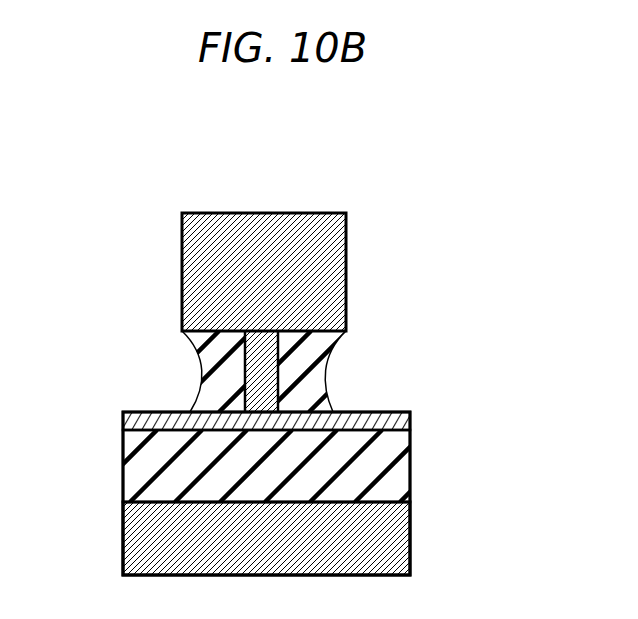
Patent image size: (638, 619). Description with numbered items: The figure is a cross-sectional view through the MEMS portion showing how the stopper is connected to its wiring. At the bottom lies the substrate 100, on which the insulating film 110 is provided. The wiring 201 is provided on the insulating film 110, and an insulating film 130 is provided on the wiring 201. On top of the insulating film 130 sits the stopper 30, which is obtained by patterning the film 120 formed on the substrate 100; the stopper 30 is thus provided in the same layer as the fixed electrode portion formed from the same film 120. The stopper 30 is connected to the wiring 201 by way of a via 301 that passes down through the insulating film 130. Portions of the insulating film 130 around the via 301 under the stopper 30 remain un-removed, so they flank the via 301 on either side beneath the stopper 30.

The stopper 30 is at (307, 224).
The film 120 is at (358, 210).
The insulating film 130 is at (307, 360).
The via 301 is at (243, 365).
The wiring 201 is at (397, 417).
The insulating film 110 is at (397, 470).
The substrate 100 is at (397, 540).